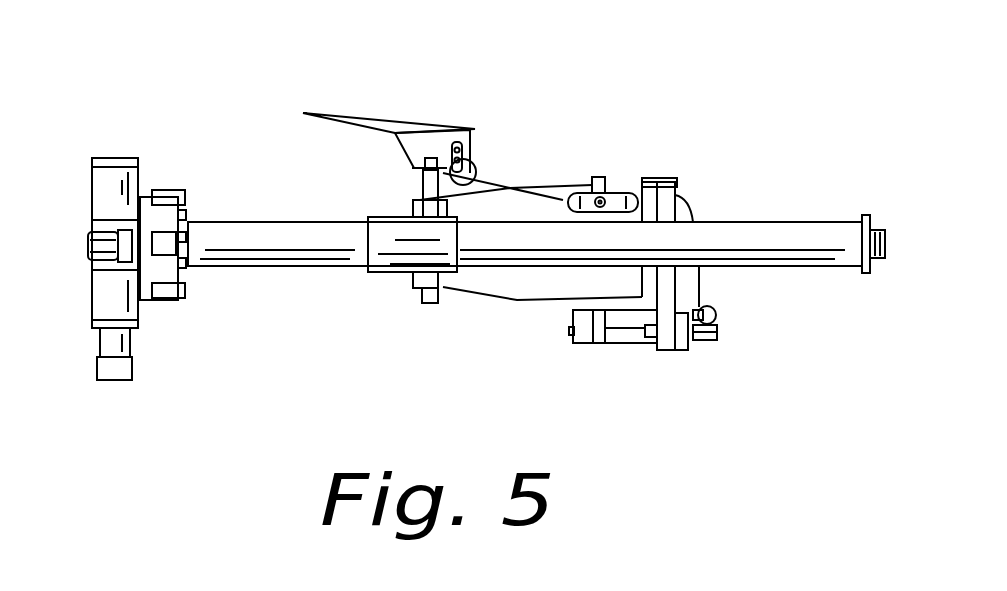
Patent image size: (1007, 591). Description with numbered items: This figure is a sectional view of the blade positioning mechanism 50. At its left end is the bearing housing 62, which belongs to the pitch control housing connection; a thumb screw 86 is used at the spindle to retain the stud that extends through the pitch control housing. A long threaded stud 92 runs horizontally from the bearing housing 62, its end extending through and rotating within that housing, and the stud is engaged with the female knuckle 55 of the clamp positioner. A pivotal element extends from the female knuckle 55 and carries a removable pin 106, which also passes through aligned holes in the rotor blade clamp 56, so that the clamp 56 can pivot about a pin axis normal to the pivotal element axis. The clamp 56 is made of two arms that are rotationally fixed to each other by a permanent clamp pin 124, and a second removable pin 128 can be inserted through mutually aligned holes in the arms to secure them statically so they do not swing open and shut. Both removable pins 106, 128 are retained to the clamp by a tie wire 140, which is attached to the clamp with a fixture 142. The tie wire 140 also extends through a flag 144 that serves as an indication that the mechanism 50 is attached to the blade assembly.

The blade positioning mechanism 50 is at (663, 57).
The female knuckle 55 is at (92, 305).
The rotor blade clamp 56 is at (507, 300).
The bearing housing 62 is at (140, 198).
The thumb screw 86 is at (135, 368).
The threaded stud 92 is at (280, 222).
The removable pin 106 is at (433, 303).
The permanent clamp pin 124 is at (572, 332).
The removable pin 128 is at (707, 343).
The tie wire 140 is at (527, 182).
The fixture 142 is at (612, 192).
The flag 144 is at (383, 114).